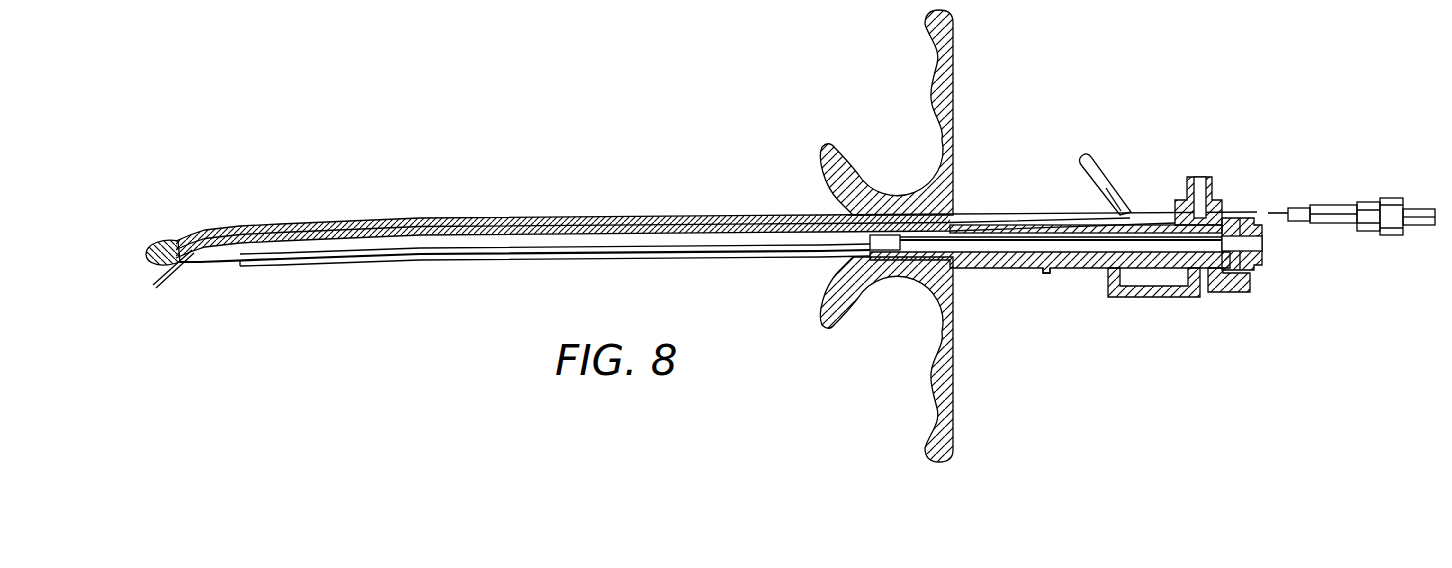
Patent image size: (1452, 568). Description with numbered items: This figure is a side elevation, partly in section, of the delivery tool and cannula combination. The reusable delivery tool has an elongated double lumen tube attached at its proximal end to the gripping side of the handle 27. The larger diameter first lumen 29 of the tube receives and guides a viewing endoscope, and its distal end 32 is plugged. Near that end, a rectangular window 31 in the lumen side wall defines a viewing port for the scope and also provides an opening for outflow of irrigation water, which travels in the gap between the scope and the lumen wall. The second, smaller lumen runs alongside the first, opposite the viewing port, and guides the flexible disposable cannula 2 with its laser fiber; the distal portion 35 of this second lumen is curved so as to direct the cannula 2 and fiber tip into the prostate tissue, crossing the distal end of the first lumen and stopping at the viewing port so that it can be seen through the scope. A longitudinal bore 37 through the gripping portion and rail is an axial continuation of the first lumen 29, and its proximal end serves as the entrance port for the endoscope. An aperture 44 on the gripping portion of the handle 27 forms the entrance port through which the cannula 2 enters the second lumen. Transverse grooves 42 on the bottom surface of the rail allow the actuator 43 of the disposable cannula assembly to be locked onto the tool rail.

The flexible cannula 2 is at (163, 280).
The handle 27 is at (953, 101).
The first lumen 29 is at (547, 241).
The rectangular window 31 is at (228, 262).
The distal end 32 is at (148, 243).
The distal portion 35 is at (198, 233).
The longitudinal bore 37 is at (987, 242).
The transverse grooves 42 is at (1063, 273).
The actuator 43 is at (1158, 298).
The aperture 44 is at (855, 214).